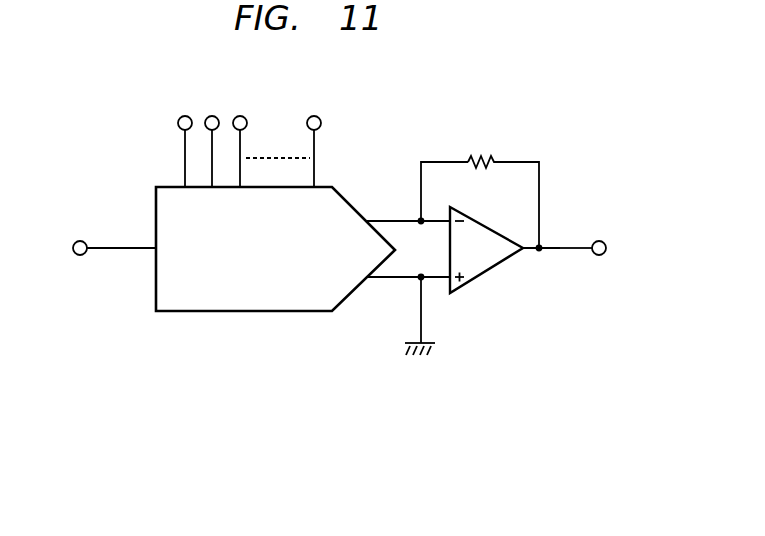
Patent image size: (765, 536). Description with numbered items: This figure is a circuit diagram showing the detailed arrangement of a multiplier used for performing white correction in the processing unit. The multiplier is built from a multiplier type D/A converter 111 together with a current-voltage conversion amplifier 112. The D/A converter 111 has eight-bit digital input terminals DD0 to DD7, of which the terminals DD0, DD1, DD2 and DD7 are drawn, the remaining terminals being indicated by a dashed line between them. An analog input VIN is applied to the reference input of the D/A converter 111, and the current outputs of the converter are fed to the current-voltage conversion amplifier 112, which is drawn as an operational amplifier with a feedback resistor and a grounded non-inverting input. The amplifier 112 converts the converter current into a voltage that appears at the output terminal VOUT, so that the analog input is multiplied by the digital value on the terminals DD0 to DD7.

The multiplier type D/A converter 111 is at (238, 311).
The current-voltage conversion amplifier 112 is at (491, 267).
The digital input terminal DD0 is at (186, 123).
The digital input terminal DD1 is at (213, 123).
The digital input terminal DD2 is at (241, 123).
The digital input terminal DD7 is at (315, 123).
The input voltage terminal VIN is at (94, 250).
The output voltage terminal VOUT is at (608, 250).